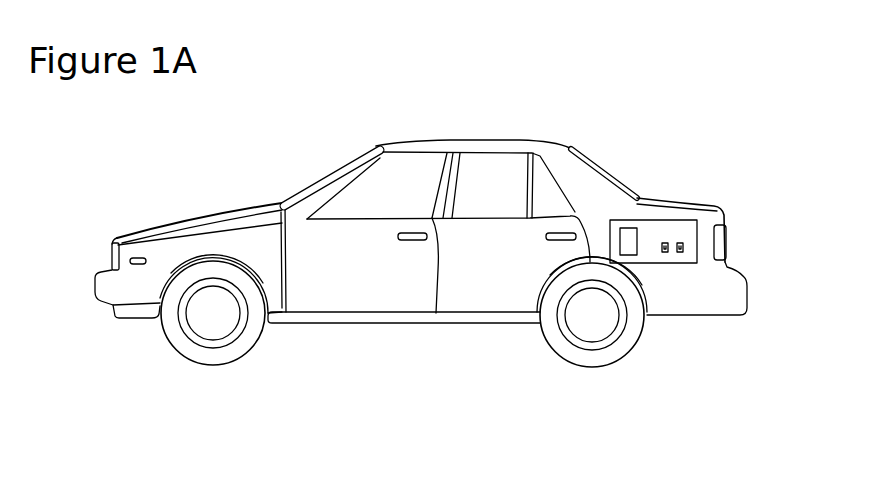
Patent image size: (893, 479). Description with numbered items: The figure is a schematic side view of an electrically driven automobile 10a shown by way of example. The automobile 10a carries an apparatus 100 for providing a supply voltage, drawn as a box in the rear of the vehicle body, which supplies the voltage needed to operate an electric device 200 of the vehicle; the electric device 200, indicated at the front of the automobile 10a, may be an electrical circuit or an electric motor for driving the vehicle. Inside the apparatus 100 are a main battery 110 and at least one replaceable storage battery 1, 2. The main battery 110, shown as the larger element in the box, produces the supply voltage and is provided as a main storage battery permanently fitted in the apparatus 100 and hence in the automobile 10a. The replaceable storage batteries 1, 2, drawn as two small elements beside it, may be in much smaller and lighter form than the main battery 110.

The automobile 10a is at (304, 159).
The electric device 200 is at (172, 252).
The apparatus for providing a supply voltage 100 is at (667, 220).
The main battery 110 is at (624, 238).
The replaceable storage battery 1 is at (663, 253).
The replaceable storage battery 2 is at (680, 253).